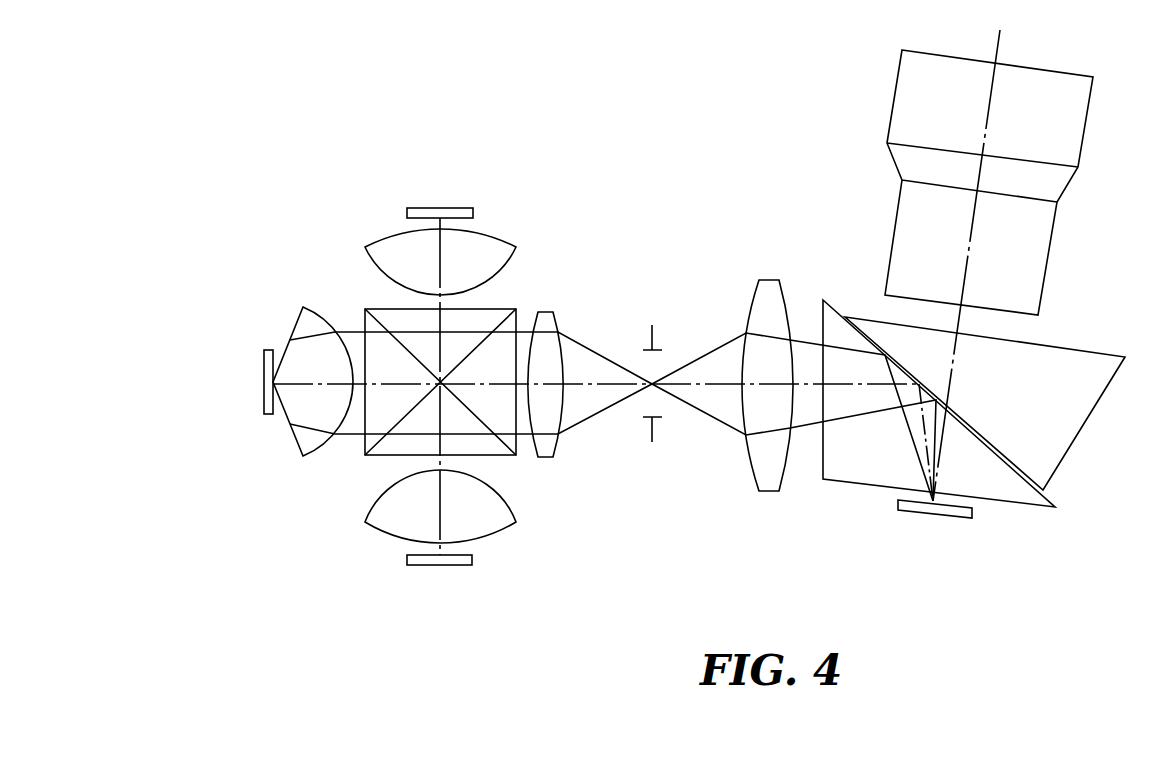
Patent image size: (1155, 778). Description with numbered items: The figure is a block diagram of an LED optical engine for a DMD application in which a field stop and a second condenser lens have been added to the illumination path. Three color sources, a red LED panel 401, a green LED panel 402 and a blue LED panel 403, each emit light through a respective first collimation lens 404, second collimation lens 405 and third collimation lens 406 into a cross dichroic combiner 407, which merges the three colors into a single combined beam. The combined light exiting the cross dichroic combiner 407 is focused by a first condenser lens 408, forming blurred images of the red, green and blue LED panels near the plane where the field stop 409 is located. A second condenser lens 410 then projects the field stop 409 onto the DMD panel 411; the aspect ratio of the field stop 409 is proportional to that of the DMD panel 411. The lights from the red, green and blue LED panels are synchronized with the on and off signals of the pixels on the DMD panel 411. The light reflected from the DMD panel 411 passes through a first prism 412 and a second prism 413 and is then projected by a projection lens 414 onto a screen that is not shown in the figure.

The red LED panel 401 is at (417, 207).
The green LED panel 402 is at (263, 350).
The blue LED panel 403 is at (415, 565).
The first collimation lens 404 is at (495, 242).
The second collimation lens 405 is at (312, 320).
The third collimation lens 406 is at (492, 504).
The cross dichroic combiner 407 is at (495, 313).
The first condenser lens 408 is at (548, 445).
The field stop 409 is at (648, 338).
The second condenser lens 410 is at (768, 280).
The DMD panel 411 is at (950, 523).
The first prism 412 is at (833, 468).
The second prism 413 is at (1080, 357).
The projection lens 414 is at (905, 117).